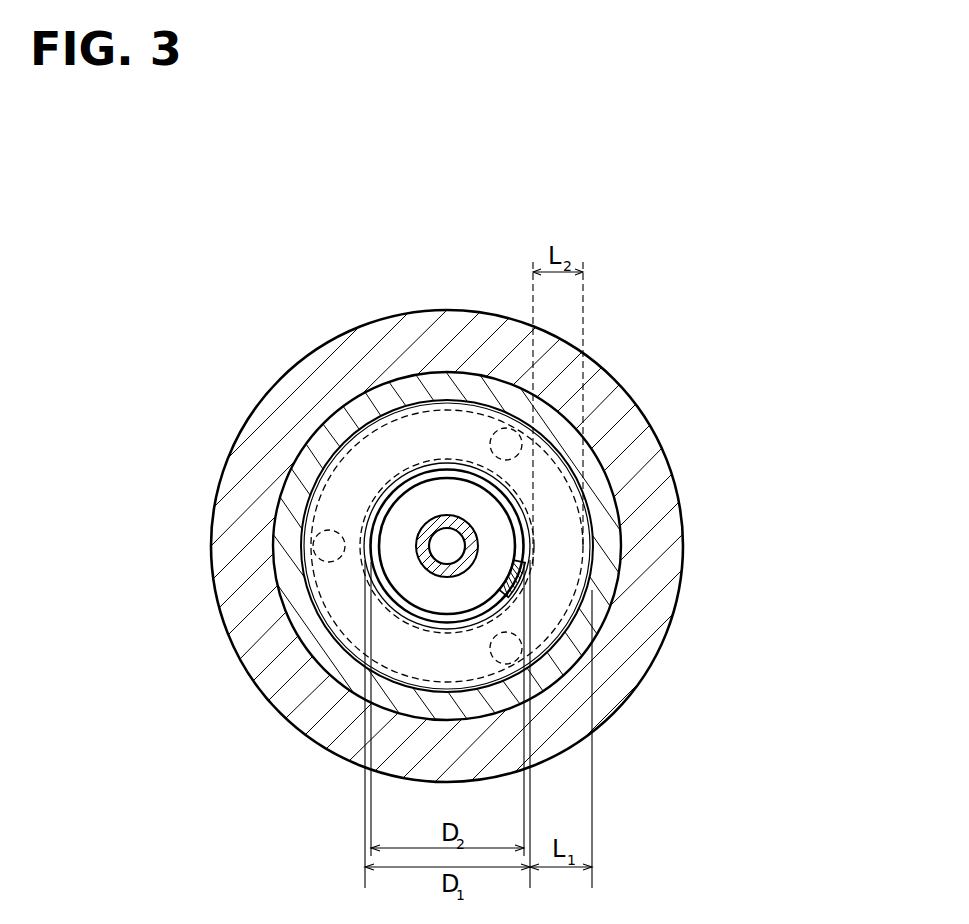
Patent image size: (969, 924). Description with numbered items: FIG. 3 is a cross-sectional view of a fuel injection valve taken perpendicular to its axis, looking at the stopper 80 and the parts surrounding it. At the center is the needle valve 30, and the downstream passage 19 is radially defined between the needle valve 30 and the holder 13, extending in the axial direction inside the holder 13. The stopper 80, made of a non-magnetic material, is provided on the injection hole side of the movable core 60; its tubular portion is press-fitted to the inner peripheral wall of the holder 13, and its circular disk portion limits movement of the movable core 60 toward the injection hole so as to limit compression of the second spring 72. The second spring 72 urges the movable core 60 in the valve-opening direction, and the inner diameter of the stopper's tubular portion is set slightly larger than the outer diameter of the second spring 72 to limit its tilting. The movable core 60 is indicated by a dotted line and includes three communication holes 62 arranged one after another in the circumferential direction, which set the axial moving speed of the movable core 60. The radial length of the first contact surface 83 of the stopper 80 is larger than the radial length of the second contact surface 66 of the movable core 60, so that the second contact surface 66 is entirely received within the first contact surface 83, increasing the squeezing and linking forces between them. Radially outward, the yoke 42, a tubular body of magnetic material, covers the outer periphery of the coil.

The holder 13 is at (607, 583).
The downstream passage 19 is at (430, 503).
The needle valve 30 is at (405, 481).
The yoke 42 is at (663, 530).
The movable core 60 is at (318, 676).
The communication holes 62 is at (495, 437).
The second contact surface 66 is at (318, 620).
The second spring 72 is at (330, 440).
The stopper 80 is at (300, 520).
The first contact surface 83 is at (307, 472).